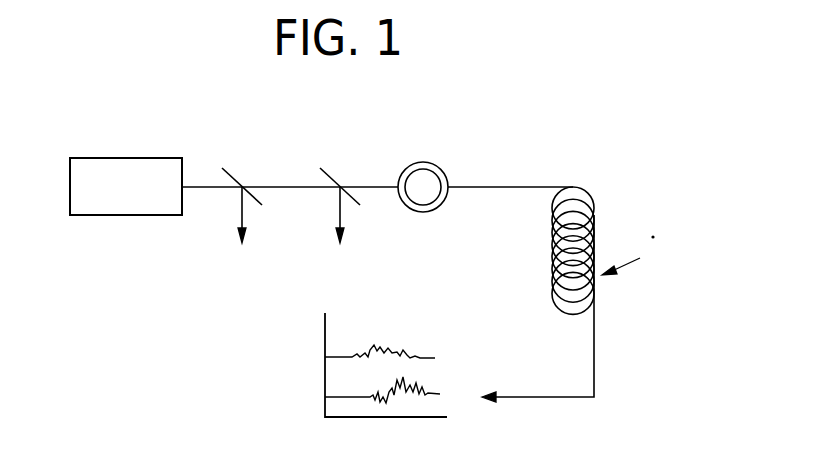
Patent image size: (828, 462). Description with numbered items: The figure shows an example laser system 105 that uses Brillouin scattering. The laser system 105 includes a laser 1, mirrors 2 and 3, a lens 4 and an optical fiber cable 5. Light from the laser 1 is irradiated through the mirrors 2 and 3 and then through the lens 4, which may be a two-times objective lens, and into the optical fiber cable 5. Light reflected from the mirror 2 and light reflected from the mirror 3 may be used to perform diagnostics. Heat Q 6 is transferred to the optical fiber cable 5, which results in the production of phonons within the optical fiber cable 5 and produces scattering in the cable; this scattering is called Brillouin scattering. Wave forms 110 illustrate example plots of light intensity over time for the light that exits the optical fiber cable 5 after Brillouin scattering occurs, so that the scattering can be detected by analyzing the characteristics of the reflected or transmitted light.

The laser system 105 is at (118, 87).
The laser 1 is at (118, 200).
The mirror 2 is at (242, 162).
The mirror 3 is at (340, 162).
The lens 4 is at (417, 199).
The optical fiber cable 5 is at (595, 213).
The heat Q 6 is at (656, 298).
The wave forms 110 is at (324, 367).